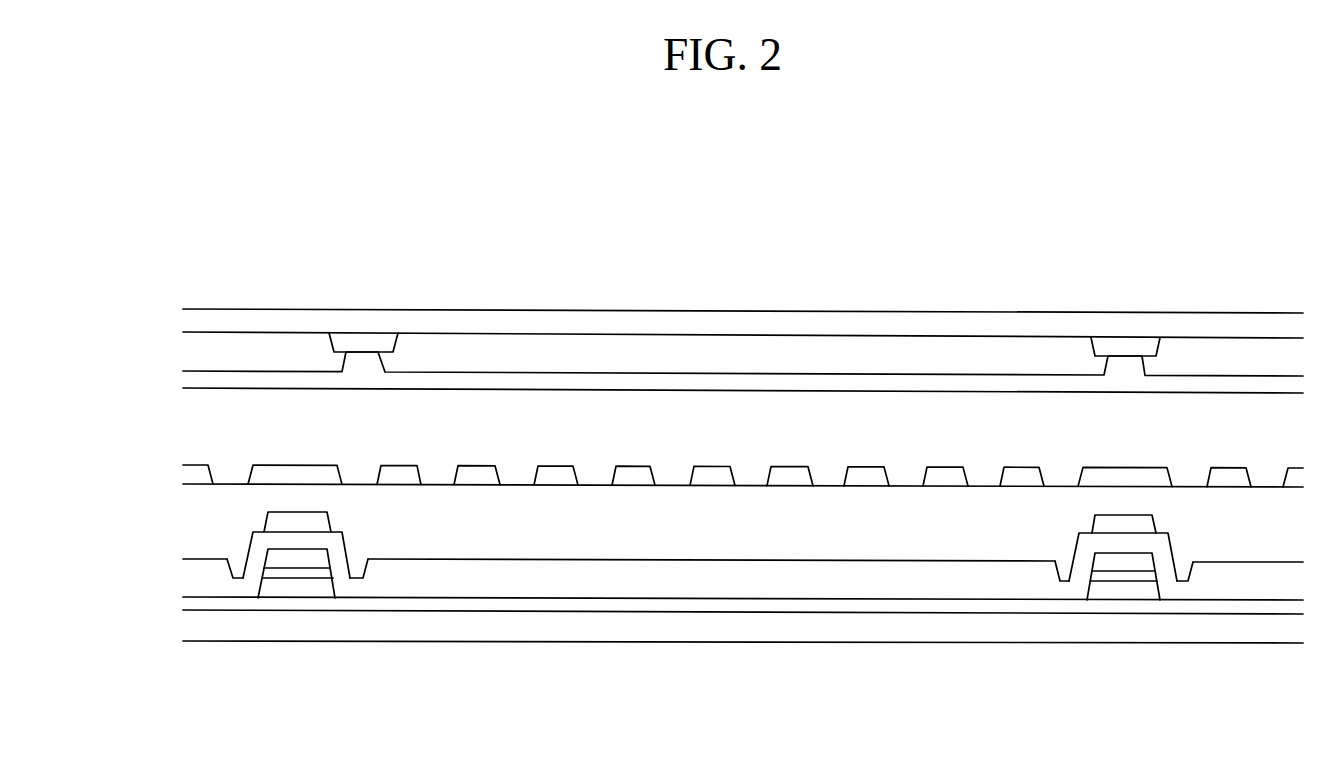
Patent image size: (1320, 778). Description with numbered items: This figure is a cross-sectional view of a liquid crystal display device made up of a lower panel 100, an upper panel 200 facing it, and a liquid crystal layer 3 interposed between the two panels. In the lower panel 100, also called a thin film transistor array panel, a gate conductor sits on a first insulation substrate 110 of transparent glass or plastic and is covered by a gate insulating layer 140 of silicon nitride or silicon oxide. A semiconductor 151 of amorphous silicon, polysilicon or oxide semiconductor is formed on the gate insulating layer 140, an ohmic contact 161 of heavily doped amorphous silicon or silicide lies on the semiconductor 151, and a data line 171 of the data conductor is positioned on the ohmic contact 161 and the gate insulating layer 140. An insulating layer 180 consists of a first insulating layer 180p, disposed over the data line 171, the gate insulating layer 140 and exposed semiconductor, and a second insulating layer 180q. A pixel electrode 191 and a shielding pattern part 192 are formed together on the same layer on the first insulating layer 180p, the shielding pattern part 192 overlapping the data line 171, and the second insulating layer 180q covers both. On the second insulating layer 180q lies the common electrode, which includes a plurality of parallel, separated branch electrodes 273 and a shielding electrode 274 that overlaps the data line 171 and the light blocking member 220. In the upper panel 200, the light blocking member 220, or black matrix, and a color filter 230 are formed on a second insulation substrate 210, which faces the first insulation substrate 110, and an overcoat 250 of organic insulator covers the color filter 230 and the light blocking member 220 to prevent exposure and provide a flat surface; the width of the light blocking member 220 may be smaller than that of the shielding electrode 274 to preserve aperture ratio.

The liquid crystal layer 3 is at (183, 390).
The lower panel 100 is at (183, 642).
The first insulation substrate 110 is at (922, 623).
The gate insulating layer 140 is at (810, 607).
The semiconductor 151 is at (1117, 592).
The ohmic contact 161 is at (1108, 577).
The data line 171 is at (1145, 563).
The insulating layer 180 is at (693, 694).
The first insulating layer 180p is at (677, 592).
The second insulating layer 180q is at (572, 521).
The pixel electrode 191 is at (397, 569).
The shielding pattern part 192 is at (292, 520).
The upper panel 200 is at (183, 308).
The second insulation substrate 210 is at (373, 322).
The light blocking member 220 is at (387, 345).
The color filter 230 is at (507, 355).
The overcoat 250 is at (674, 383).
The branch electrode 273 is at (636, 476).
The shielding electrode 274 is at (300, 475).